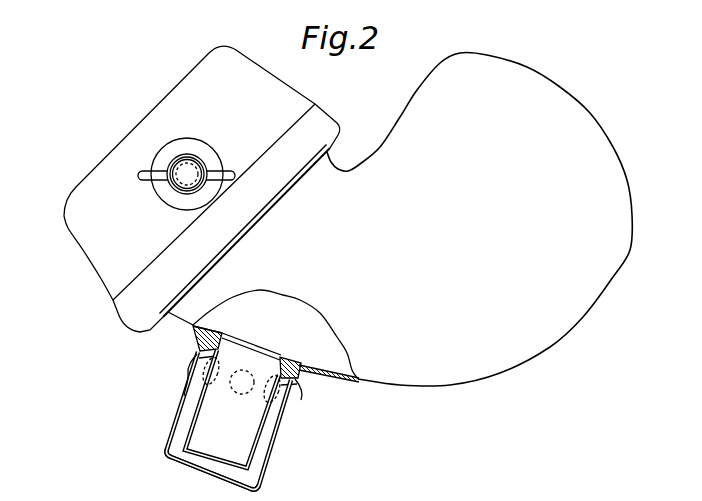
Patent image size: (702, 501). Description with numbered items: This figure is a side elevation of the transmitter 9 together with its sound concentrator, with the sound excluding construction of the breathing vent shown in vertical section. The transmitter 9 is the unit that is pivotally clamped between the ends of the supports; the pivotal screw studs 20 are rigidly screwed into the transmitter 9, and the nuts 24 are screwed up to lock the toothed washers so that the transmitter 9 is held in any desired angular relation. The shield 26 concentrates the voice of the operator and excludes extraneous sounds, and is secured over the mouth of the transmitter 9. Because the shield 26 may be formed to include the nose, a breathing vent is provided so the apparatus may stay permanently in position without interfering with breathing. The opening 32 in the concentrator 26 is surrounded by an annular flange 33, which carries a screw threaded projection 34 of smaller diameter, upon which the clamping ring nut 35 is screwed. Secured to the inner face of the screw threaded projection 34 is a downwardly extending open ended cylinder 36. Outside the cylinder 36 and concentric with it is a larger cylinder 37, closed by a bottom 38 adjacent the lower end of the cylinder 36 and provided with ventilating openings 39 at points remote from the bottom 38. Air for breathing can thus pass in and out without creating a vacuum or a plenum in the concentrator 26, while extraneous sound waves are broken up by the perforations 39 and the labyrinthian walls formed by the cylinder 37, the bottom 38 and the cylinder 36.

The transmitter 9 is at (202, 189).
The pivotal screw studs 20 is at (202, 165).
The nuts 24 is at (139, 177).
The shield 26 is at (400, 219).
The opening 32 is at (256, 338).
The annular flange 33 is at (196, 334).
The screw threaded projection 34 is at (220, 336).
The clamping ring nut 35 is at (296, 363).
The open ended cylinder 36 is at (232, 409).
The larger cylinder 37 is at (268, 447).
The bottom 38 is at (192, 472).
The ventilating openings 39 is at (195, 369).